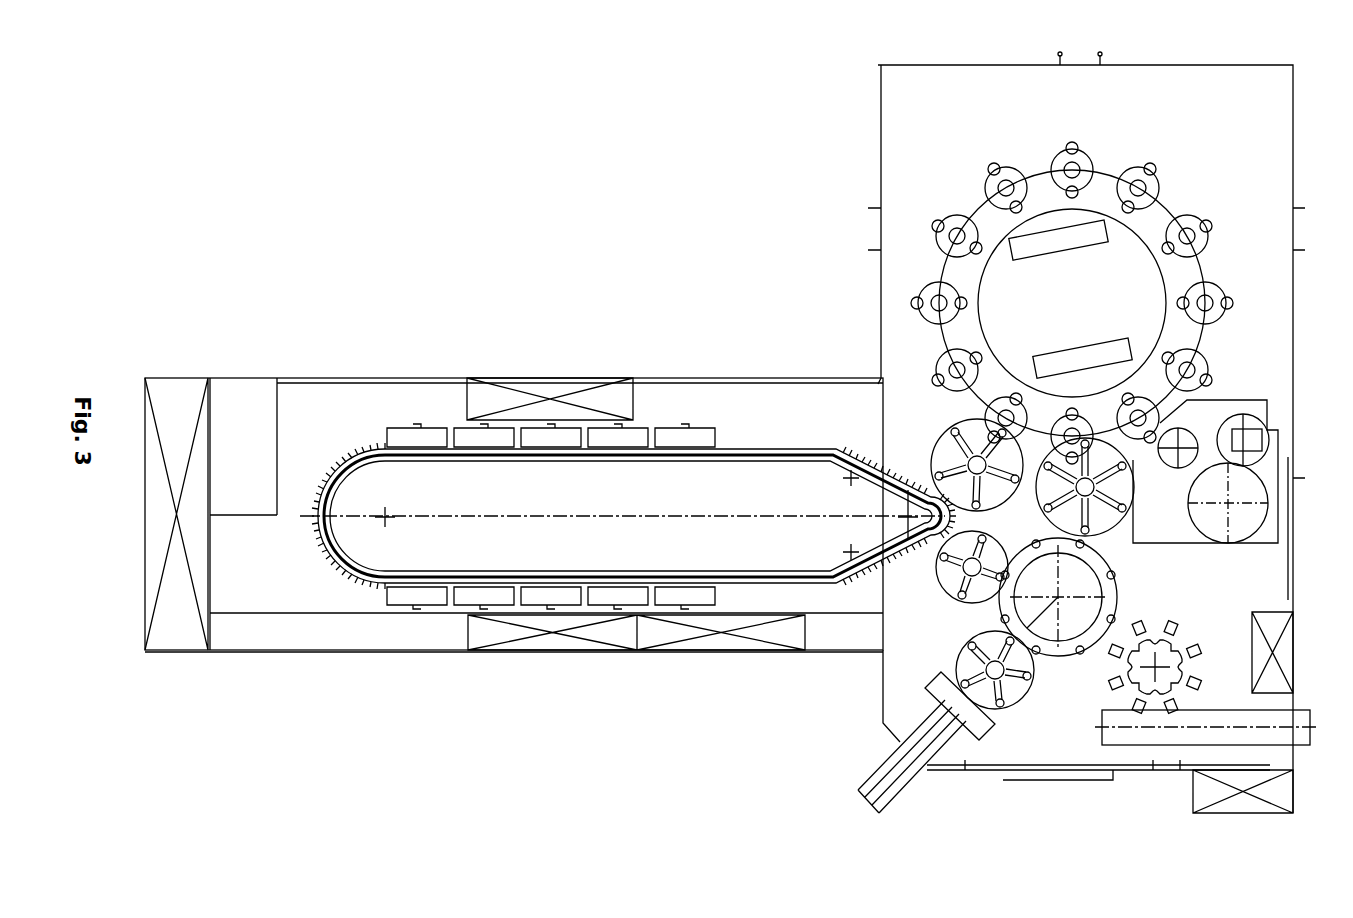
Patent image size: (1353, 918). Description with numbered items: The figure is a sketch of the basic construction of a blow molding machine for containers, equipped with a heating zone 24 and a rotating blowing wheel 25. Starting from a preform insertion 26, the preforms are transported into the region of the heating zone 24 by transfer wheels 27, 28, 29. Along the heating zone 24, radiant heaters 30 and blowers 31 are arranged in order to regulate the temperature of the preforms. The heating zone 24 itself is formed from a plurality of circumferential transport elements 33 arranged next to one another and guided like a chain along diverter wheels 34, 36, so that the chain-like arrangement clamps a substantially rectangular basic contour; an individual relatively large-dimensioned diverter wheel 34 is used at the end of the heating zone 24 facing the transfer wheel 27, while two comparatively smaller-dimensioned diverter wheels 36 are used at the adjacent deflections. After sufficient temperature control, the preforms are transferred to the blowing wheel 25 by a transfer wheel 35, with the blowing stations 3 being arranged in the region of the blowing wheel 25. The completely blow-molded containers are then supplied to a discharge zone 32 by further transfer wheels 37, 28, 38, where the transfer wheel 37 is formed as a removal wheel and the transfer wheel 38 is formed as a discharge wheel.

The blowing station 3 is at (930, 290).
The heating zone 24 is at (672, 410).
The blowing wheel 25 is at (1017, 223).
The preform insertion 26 is at (917, 760).
The transfer wheel 27 is at (1005, 712).
The transfer wheel 28 is at (1060, 657).
The transfer wheel 29 is at (945, 593).
The radiant heater 30 is at (435, 430).
The blower 31 is at (543, 388).
The discharge zone 32 is at (1302, 737).
The transport element 33 is at (355, 577).
The diverter wheel 34 is at (385, 517).
The transfer wheel 35 is at (960, 415).
The diverter wheel 36 is at (851, 478).
The transfer wheel 37 is at (1135, 505).
The transfer wheel 38 is at (1165, 682).